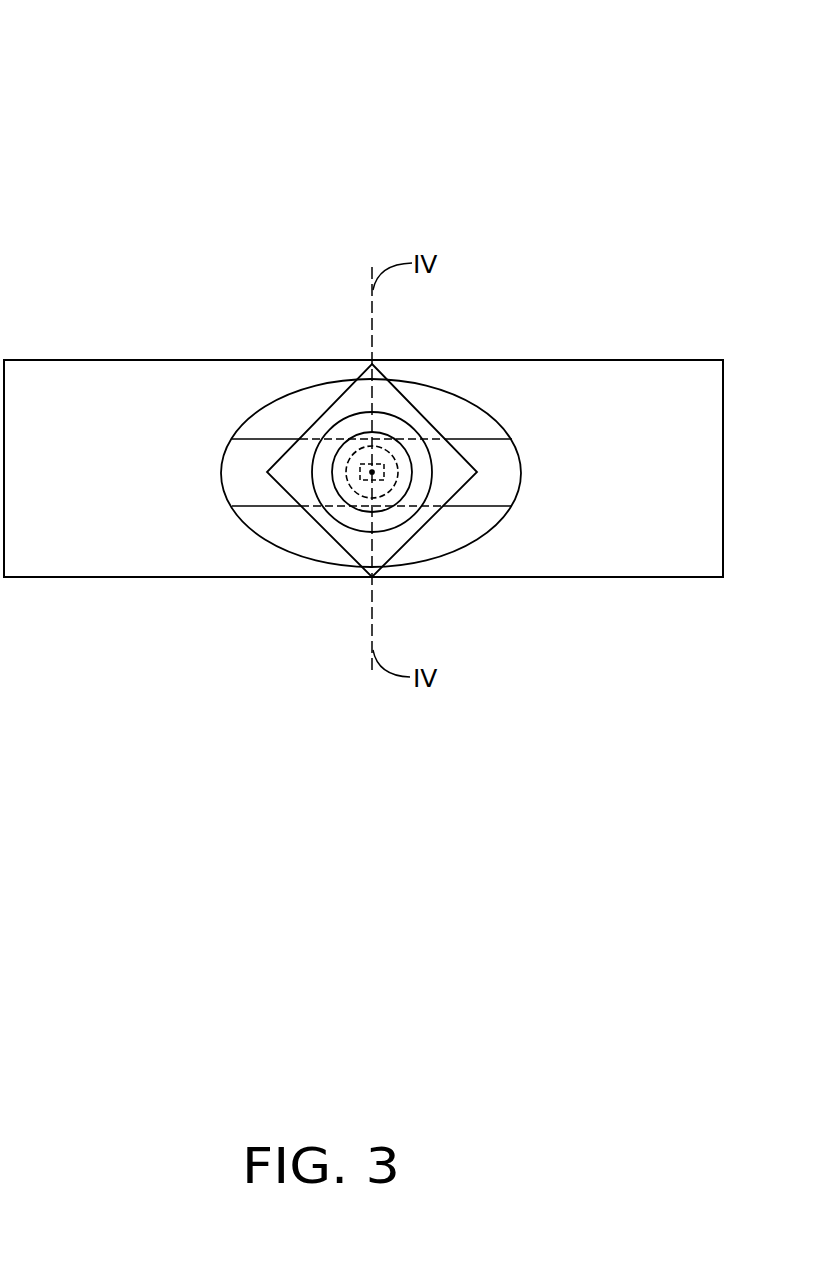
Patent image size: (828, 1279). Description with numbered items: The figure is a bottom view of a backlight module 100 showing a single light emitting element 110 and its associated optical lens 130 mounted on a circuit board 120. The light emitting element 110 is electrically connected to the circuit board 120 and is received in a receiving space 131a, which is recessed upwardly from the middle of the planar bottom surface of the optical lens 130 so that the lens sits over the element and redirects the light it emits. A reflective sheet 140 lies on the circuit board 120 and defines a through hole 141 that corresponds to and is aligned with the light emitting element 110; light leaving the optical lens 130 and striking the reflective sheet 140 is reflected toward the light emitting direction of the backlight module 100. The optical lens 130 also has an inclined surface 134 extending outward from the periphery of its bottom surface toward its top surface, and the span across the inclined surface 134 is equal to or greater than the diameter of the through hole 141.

The backlight module 100 is at (147, 50).
The light emitting element 110 is at (385, 480).
The circuit board 120 is at (245, 477).
The optical lens 130 is at (338, 529).
The receiving space 131a is at (393, 470).
The inclined surface 134 is at (382, 379).
The reflective sheet 140 is at (636, 382).
The through hole 141 is at (440, 406).